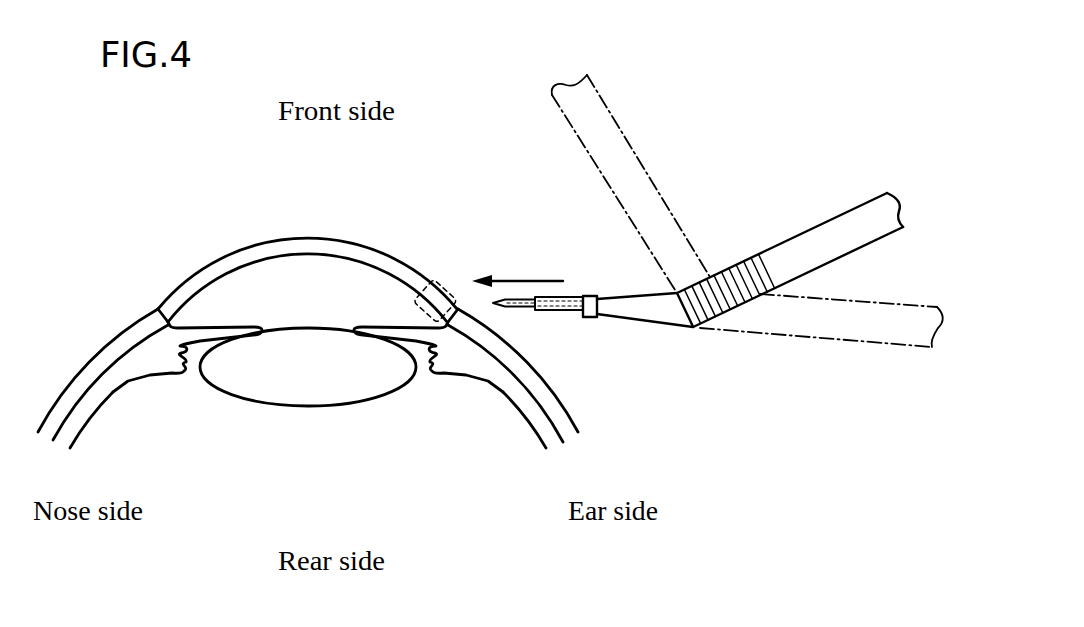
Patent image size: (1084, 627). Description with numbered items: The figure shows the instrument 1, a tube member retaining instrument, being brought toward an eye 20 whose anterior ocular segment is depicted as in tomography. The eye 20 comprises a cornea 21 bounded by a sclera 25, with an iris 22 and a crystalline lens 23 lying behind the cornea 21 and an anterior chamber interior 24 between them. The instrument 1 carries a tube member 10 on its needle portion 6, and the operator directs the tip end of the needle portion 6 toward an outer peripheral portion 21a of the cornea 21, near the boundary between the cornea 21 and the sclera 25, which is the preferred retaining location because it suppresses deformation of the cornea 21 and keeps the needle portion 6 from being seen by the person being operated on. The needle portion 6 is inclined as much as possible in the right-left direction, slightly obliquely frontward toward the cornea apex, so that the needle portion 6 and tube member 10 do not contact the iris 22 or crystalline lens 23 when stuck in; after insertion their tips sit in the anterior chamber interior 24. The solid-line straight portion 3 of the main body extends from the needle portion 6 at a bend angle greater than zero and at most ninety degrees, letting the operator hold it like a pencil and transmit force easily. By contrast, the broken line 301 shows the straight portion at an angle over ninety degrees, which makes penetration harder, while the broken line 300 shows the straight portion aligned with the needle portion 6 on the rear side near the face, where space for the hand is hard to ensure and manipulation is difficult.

The instrument 1 is at (772, 226).
The straight portion 3 is at (838, 225).
The needle portion 6 is at (522, 307).
The tube member 10 is at (591, 296).
The eye 20 is at (108, 216).
The cornea 21 is at (328, 247).
The outer peripheral portion 21a is at (440, 275).
The iris 22 is at (225, 328).
The crystalline lens 23 is at (295, 393).
The anterior chamber interior 24 is at (288, 278).
The sclera 25 is at (547, 392).
The broken line 300 is at (822, 340).
The broken line 301 is at (630, 148).